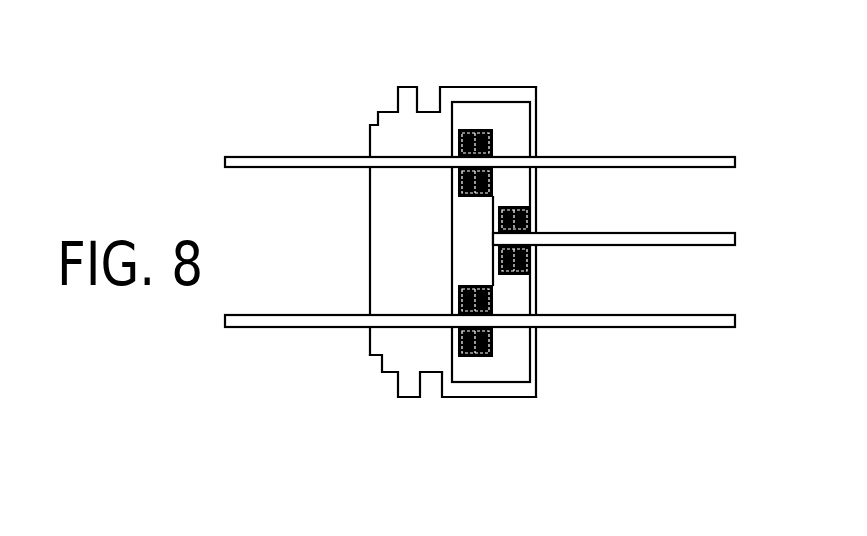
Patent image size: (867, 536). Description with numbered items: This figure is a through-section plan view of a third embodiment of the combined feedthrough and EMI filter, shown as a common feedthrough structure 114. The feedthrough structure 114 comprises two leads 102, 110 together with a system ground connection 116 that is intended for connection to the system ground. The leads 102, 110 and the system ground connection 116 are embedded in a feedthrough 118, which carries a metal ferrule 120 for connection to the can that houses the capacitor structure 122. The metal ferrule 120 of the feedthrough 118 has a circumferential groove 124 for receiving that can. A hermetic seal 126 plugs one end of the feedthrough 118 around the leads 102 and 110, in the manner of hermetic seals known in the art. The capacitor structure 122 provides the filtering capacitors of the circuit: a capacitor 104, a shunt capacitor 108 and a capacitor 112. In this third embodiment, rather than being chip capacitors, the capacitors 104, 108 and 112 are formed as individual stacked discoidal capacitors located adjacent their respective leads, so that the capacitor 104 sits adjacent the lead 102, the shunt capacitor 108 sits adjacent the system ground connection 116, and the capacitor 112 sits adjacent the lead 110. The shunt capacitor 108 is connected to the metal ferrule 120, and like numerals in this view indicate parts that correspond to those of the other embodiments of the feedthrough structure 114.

The lead 102 is at (505, 122).
The capacitor 104 is at (498, 187).
The shunt capacitor 108 is at (557, 222).
The lead 110 is at (497, 349).
The capacitor 112 is at (570, 307).
The feedthrough structure 114 is at (258, 355).
The system ground connection 116 is at (640, 207).
The feedthrough 118 is at (489, 425).
The metal ferrule 120 is at (552, 268).
The capacitor structure 122 is at (549, 230).
The circumferential groove 124 is at (399, 417).
The hermetic seal 126 is at (394, 253).